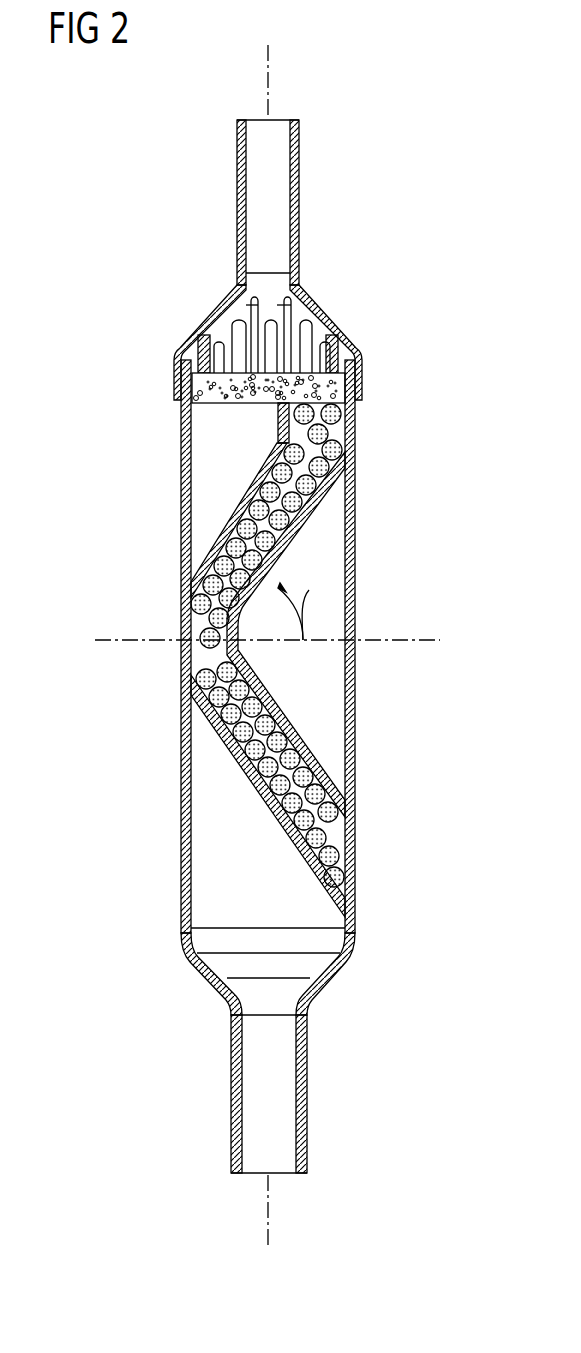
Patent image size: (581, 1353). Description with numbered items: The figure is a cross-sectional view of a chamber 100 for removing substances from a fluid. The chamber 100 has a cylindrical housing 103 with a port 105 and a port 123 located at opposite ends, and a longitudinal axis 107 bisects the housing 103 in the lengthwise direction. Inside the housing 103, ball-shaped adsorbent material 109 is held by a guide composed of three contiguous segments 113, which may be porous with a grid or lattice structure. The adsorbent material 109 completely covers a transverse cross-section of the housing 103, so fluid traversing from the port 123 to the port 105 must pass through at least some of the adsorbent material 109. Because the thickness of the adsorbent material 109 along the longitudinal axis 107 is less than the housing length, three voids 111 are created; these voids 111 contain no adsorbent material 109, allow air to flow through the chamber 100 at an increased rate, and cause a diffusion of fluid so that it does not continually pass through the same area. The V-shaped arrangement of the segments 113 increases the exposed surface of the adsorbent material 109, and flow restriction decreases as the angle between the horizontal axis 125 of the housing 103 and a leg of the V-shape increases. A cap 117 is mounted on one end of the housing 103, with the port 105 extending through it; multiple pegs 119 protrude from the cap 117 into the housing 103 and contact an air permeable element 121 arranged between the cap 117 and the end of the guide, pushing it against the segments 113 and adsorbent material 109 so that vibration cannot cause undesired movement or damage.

The chamber 100 is at (483, 191).
The housing 103 is at (276, 766).
The port 105 is at (253, 119).
The longitudinal axis 107 is at (272, 76).
The adsorbent material 109 is at (354, 444).
The voids 111 is at (183, 492).
The segments 113 is at (277, 424).
The cap 117 is at (352, 342).
The pegs 119 is at (224, 304).
The air permeable element 121 is at (175, 390).
The port 123 is at (290, 1176).
The horizontal axis 125 is at (420, 640).